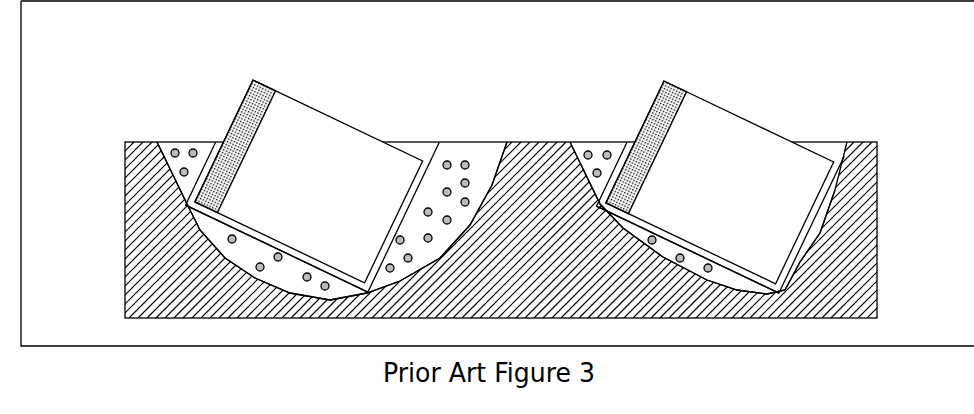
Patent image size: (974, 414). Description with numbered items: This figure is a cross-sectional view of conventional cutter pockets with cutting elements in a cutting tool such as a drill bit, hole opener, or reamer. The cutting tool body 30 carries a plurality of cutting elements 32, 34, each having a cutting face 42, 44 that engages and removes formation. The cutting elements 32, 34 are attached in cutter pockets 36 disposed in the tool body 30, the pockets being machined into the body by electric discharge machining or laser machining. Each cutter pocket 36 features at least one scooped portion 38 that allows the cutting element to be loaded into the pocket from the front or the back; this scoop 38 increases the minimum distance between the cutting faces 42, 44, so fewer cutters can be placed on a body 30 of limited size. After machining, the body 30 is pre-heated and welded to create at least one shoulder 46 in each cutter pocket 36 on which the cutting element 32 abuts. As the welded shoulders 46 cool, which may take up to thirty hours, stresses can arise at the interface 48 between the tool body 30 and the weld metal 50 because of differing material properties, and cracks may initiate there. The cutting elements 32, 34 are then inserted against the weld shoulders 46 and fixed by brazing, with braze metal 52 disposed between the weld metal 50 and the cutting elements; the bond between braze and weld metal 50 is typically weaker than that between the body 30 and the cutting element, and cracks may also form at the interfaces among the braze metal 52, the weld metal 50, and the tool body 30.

The cutting tool body 30 is at (532, 283).
The cutting element 32 is at (307, 208).
The cutting element 34 is at (719, 208).
The cutter pocket 36 is at (166, 195).
The scooped portion 38 is at (157, 146).
The cutting face 42 is at (228, 132).
The cutting face 44 is at (648, 112).
The shoulder 46 is at (211, 146).
The interface 48 is at (463, 237).
The weld metal 50 is at (182, 175).
The braze metal 52 is at (273, 243).